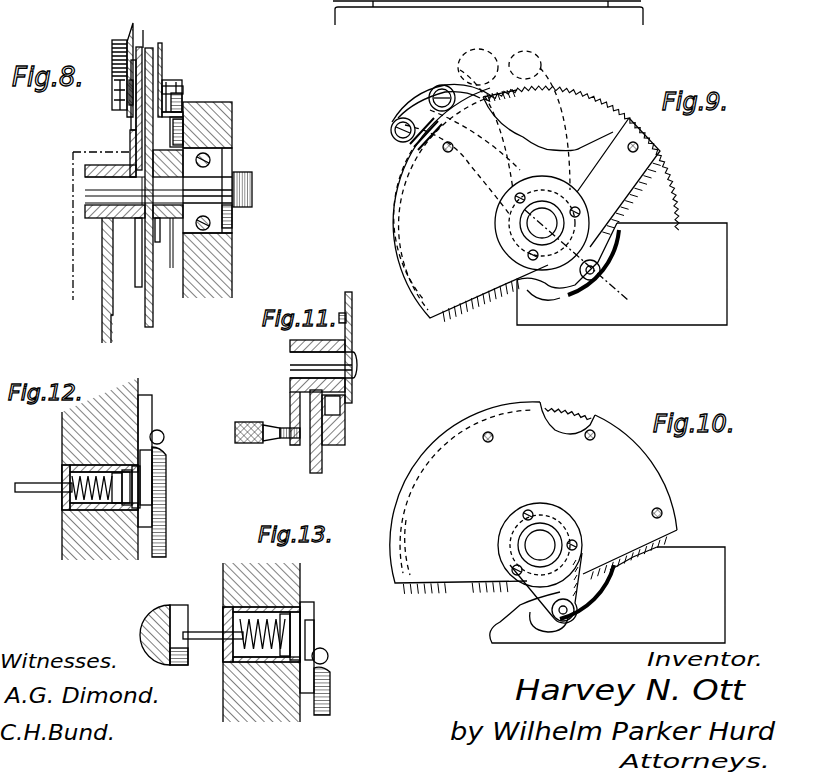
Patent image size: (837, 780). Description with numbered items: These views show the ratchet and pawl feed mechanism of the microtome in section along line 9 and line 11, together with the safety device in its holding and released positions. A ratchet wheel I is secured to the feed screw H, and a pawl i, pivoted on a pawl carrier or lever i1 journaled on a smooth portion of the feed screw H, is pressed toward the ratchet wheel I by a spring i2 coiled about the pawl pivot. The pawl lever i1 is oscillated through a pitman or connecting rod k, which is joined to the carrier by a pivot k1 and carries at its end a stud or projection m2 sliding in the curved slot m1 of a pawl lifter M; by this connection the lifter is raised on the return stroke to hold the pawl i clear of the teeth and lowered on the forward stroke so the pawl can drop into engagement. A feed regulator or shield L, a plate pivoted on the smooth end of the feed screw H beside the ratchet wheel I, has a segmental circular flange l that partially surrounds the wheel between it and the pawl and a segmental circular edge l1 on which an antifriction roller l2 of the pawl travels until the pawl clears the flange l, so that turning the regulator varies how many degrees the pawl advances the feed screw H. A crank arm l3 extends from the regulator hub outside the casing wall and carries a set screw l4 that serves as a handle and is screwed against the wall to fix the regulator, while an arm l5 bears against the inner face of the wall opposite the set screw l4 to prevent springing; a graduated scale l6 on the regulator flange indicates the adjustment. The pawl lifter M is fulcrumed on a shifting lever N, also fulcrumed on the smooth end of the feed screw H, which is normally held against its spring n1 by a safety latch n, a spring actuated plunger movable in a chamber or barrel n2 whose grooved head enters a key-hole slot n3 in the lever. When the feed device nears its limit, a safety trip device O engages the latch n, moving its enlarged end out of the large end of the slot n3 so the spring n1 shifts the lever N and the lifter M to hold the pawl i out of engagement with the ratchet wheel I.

In FIG. 8, the section line 9 is at (106, 168).
In FIG. 8, the ratchet wheel I is at (153, 313).
In FIG. 9, the ratchet wheel I is at (581, 158).
In FIG. 10, the ratchet wheel I is at (584, 421).
In FIG. 8, the segmental circular flange l is at (149, 47).
In FIG. 9, the segmental circular flange l is at (512, 93).
In FIG. 10, the segmental circular flange l is at (550, 406).
In FIG. 8, the graduated scale l6 is at (117, 40).
In FIG. 8, the pawl carrier or lever i1 is at (133, 129).
In FIG. 9, the pawl carrier or lever i1 is at (425, 131).
In FIG. 8, the feed regulator or shield L is at (131, 150).
In FIG. 9, the feed regulator or shield L is at (470, 205).
In FIG. 10, the feed regulator or shield L is at (533, 498).
In FIG. 11, the feed regulator or shield L is at (352, 304).
In FIG. 8, the pawl lifter M is at (162, 53).
In FIG. 8, the pitman or connecting rod k is at (169, 84).
In FIG. 8, the curved slot m1 is at (168, 97).
In FIG. 8, the stud or projection m2 is at (183, 93).
In FIG. 8, the pivot k1 is at (180, 136).
In FIG. 8, the shifting lever N is at (222, 230).
In FIG. 12, the shifting lever N is at (152, 407).
In FIG. 13, the shifting lever N is at (326, 676).
In FIG. 8, the feed screw H is at (244, 172).
In FIG. 9, the feed screw H is at (536, 214).
In FIG. 10, the feed screw H is at (546, 540).
In FIG. 11, the feed screw H is at (290, 354).
In FIG. 8, the crank arm l3 is at (98, 222).
In FIG. 9, the crank arm l3 is at (583, 248).
In FIG. 10, the crank arm l3 is at (538, 596).
In FIG. 11, the crank arm l3 is at (290, 395).
In FIG. 9, the segmental circular edge l1 is at (397, 207).
In FIG. 10, the segmental circular edge l1 is at (451, 434).
In FIG. 9, the pawl i is at (419, 106).
In FIG. 9, the spring i2 is at (397, 120).
In FIG. 9, the antifriction roller l2 is at (443, 85).
In FIG. 9, the section line 11 is at (512, 190).
In FIG. 9, the set screw l4 is at (600, 272).
In FIG. 10, the set screw l4 is at (576, 617).
In FIG. 11, the set screw l4 is at (264, 442).
In FIG. 11, the arm l5 is at (345, 408).
In FIG. 12, the safety latch or holding device n is at (165, 488).
In FIG. 13, the safety latch or holding device n is at (313, 621).
In FIG. 12, the spring n1 is at (167, 523).
In FIG. 13, the spring n1 is at (330, 702).
In FIG. 12, the chamber or barrel n2 is at (70, 465).
In FIG. 13, the chamber or barrel n2 is at (232, 600).
In FIG. 12, the key-hole slot n3 is at (160, 470).
In FIG. 13, the key-hole slot n3 is at (324, 656).
In FIG. 13, the safety trip device or projection O is at (182, 656).